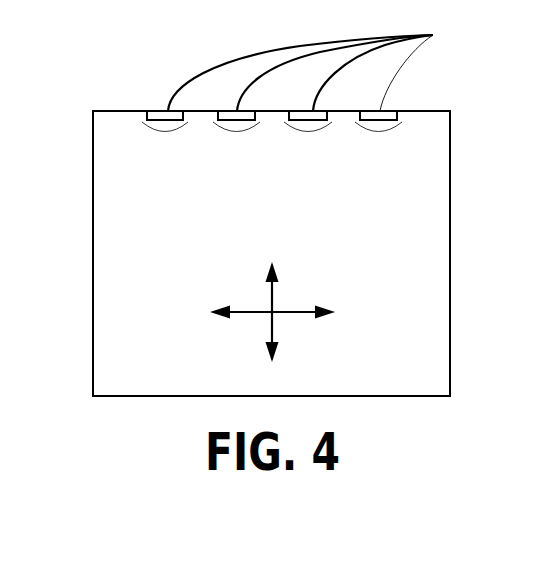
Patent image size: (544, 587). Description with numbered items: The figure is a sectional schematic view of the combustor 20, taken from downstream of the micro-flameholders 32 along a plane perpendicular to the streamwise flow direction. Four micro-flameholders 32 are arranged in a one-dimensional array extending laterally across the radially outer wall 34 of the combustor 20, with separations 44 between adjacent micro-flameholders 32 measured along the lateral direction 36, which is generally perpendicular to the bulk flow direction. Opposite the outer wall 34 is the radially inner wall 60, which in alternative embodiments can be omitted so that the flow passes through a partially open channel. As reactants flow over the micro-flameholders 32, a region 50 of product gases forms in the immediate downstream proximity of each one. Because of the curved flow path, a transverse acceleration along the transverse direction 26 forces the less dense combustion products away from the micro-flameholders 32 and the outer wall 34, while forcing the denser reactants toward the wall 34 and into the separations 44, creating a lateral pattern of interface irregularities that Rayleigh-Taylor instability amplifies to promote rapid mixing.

The combustor 20 is at (272, 214).
The micro-flameholders 32 is at (433, 35).
The radially outer wall 34 is at (432, 110).
The region of product gases 50 is at (213, 128).
The separations 44 is at (345, 147).
The lateral direction 36 is at (298, 310).
The transverse direction 26 is at (272, 328).
The radially inner wall 60 is at (435, 396).